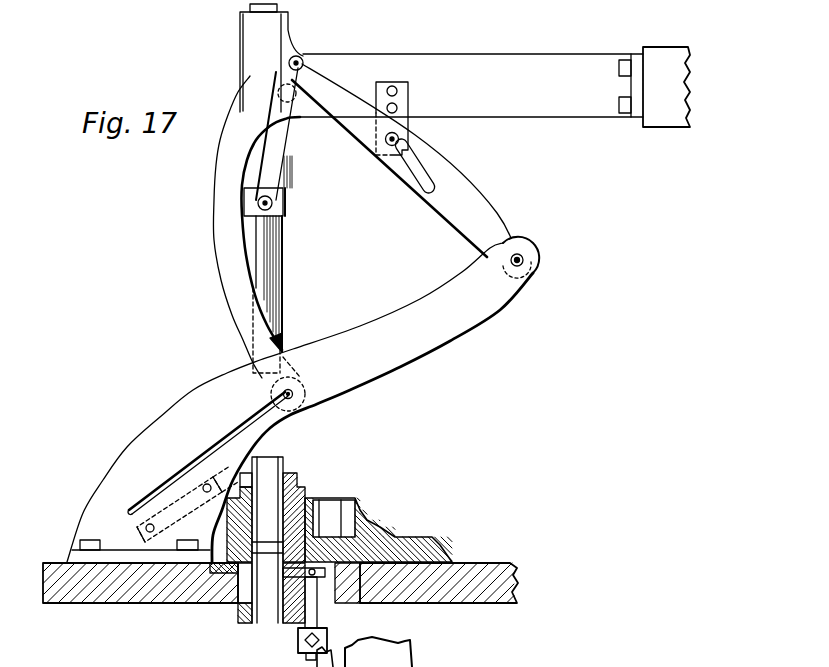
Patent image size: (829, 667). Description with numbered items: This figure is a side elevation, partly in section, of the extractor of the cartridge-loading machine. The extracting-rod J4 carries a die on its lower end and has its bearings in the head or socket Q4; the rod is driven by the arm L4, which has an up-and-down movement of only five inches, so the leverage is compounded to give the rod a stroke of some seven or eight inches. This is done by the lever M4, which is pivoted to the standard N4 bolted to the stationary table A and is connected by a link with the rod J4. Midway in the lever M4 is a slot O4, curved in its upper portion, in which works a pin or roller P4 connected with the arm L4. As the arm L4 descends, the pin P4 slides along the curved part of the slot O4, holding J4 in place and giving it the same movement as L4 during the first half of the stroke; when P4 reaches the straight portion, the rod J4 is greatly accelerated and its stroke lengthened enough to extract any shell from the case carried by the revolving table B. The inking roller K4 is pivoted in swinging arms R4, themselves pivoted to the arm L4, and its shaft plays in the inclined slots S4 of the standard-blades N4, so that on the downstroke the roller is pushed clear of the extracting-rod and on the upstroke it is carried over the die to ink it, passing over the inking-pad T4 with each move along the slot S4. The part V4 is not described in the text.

The head or socket Q4 is at (271, 58).
The arm L4 is at (495, 87).
The swinging arms R4 is at (238, 223).
The lever M4 is at (458, 213).
The slot O4 is at (415, 167).
The pin or roller P4 is at (388, 147).
The extracting-rod J4 is at (267, 263).
The standard N4 is at (300, 403).
The roller K4 is at (300, 400).
The inclined slots S4 is at (197, 452).
The inking-pad T4 is at (147, 517).
The stationary table A is at (83, 595).
The revolving table B is at (427, 550).
The lever V4 is at (283, 577).